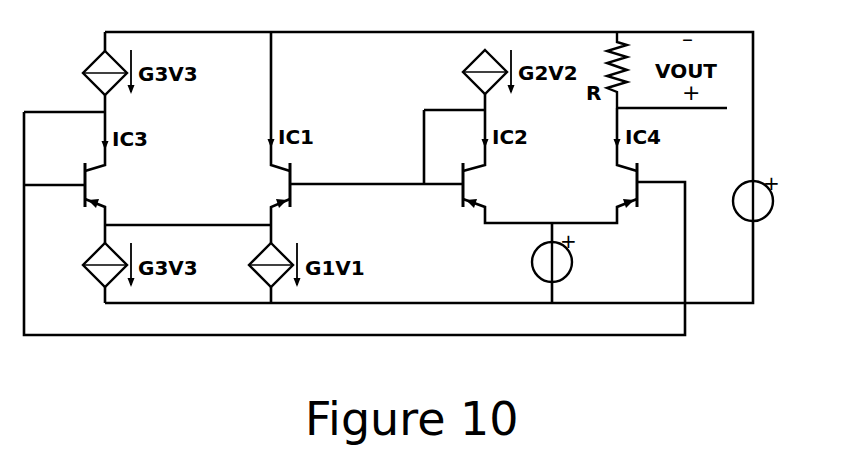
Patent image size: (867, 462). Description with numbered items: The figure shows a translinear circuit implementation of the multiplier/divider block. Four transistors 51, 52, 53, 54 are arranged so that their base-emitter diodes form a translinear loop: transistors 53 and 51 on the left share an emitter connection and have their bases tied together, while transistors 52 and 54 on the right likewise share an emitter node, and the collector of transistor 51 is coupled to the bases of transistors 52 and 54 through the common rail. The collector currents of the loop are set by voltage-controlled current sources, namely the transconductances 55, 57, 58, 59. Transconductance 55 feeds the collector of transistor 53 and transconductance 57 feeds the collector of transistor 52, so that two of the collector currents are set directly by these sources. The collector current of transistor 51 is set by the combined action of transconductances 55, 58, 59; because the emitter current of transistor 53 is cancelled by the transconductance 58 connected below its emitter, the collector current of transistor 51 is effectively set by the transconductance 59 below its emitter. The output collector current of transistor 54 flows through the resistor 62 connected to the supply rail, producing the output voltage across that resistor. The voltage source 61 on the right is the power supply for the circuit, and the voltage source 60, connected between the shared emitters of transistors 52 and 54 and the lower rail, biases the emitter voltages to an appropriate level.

The transistor 51 is at (266, 186).
The transistor 52 is at (487, 186).
The transistor 53 is at (109, 186).
The transistor 54 is at (613, 186).
The transconductance 55 is at (89, 72).
The transconductance 57 is at (469, 70).
The transconductance 58 is at (89, 265).
The transconductance 59 is at (256, 265).
The voltage source 60 is at (569, 262).
The voltage source 61 is at (742, 192).
The resistor 62 is at (602, 70).